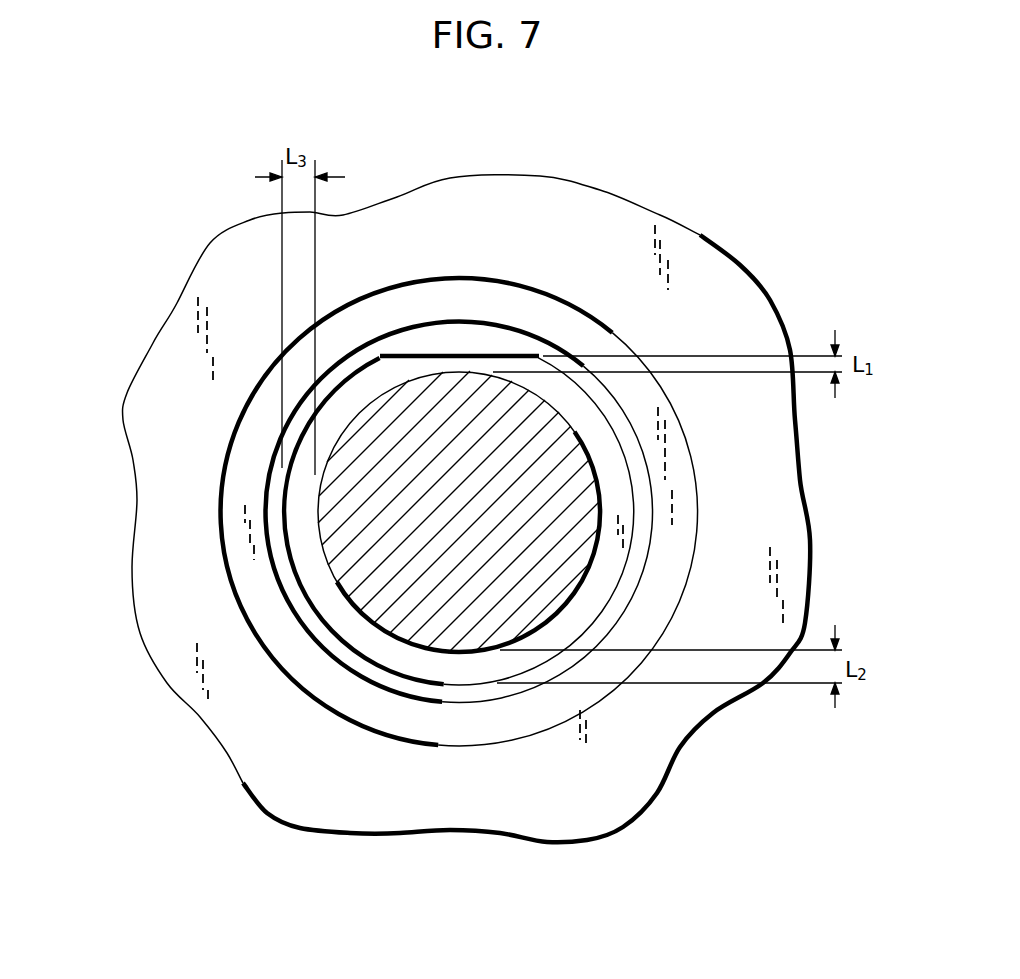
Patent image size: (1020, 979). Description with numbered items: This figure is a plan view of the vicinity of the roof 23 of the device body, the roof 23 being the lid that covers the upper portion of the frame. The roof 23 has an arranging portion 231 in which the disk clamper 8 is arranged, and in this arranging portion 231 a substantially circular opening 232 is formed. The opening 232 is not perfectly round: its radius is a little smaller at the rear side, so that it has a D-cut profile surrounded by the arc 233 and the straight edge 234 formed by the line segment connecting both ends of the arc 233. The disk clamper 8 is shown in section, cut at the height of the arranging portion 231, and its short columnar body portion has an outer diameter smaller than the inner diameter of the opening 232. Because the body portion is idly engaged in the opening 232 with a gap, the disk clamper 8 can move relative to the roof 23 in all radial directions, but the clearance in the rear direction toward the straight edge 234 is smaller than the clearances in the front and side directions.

The roof 23 is at (568, 793).
The arranging portion 231 is at (428, 688).
The opening 232 is at (352, 628).
The arc 233 is at (370, 668).
The flat portion 234 is at (482, 356).
The disk clamper 8 is at (350, 553).